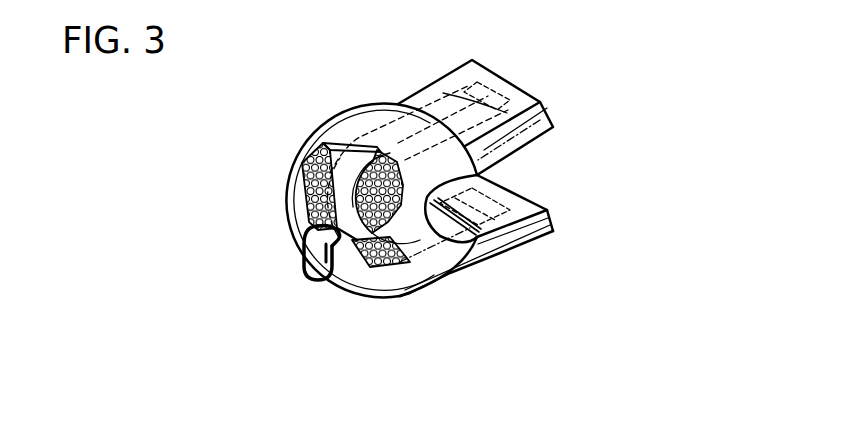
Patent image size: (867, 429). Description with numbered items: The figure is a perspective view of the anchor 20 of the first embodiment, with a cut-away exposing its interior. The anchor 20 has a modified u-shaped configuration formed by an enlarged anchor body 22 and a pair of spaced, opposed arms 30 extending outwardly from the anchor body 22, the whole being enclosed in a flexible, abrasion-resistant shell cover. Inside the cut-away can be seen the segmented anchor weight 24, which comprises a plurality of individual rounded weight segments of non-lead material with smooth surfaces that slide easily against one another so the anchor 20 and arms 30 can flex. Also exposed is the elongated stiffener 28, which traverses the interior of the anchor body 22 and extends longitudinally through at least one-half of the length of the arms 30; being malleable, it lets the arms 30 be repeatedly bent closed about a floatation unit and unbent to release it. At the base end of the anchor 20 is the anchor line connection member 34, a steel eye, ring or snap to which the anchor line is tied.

The anchor 20 is at (329, 96).
The anchor body 22 is at (403, 297).
The segmented anchor weight 24 is at (310, 189).
The elongated stiffener 28 is at (503, 197).
The arms 30 is at (518, 83).
The anchor line connection member 34 is at (318, 281).